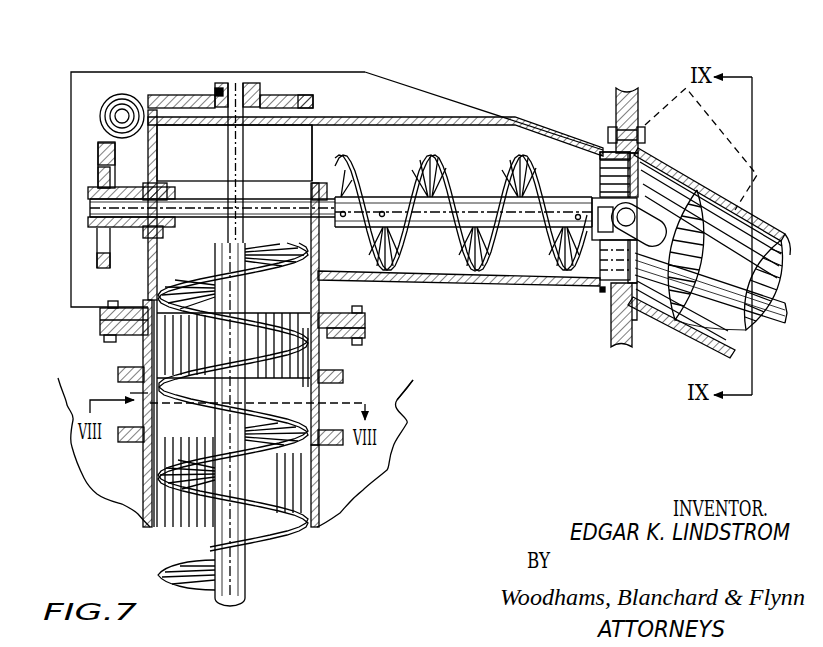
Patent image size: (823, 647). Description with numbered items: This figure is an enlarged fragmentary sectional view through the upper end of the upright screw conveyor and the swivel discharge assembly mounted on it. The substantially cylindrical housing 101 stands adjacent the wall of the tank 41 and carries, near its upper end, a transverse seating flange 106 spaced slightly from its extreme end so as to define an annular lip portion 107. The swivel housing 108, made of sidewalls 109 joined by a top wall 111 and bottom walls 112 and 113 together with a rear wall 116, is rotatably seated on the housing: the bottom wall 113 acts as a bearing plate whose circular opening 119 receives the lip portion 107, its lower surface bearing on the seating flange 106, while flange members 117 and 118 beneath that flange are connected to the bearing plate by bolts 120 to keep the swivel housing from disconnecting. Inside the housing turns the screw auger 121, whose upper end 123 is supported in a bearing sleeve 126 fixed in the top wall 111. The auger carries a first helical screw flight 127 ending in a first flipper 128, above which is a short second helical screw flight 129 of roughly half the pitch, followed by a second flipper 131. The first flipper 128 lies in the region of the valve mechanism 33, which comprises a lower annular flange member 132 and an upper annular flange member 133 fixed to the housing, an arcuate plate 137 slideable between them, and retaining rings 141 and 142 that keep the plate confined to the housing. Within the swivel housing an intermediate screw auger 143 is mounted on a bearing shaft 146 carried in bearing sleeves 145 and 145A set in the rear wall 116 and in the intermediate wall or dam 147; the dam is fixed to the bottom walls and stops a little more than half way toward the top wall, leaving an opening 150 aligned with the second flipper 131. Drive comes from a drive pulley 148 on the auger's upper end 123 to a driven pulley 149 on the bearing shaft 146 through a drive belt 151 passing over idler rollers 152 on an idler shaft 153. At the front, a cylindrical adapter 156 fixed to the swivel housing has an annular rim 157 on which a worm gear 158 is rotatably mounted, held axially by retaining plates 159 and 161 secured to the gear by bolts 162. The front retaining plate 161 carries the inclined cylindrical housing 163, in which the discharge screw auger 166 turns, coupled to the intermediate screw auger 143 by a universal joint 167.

The valve mechanism 33 is at (70, 416).
The tank 41 is at (395, 401).
The cylindrical housing 101 is at (318, 505).
The seating flange 106 is at (100, 327).
The lip portion 107 is at (143, 308).
The swivel housing 108 is at (368, 70).
The sidewalls 109 is at (402, 103).
The top wall 111 is at (472, 119).
The bottom wall 112 is at (523, 282).
The bottom wall 113 is at (333, 311).
The rear wall 116 is at (148, 257).
The flange member 117 is at (365, 337).
The flange member 118 is at (106, 336).
The circular opening 119 is at (306, 340).
The bolts 120 is at (364, 313).
The screw auger 121 is at (254, 571).
The upper end 123 is at (233, 83).
The bearing sleeve 126 is at (258, 100).
The first helical screw flight 127 is at (163, 572).
The first flipper 128 is at (393, 421).
The second helical screw flight 129 is at (187, 290).
The second flipper 131 is at (187, 143).
The lower annular flange member 132 is at (140, 455).
The upper annular flange member 133 is at (118, 373).
The arcuate plate 137 is at (143, 393).
The retaining ring 141 is at (388, 460).
The retaining ring 142 is at (346, 380).
The intermediate screw auger 143 is at (470, 212).
The bearing sleeve 145 is at (152, 185).
The bearing sleeve 145A is at (318, 183).
The bearing shaft 146 is at (100, 210).
The intermediate wall or dam 147 is at (313, 278).
The drive pulley 148 is at (167, 93).
The driven pulley 149 is at (107, 177).
The opening 150 is at (318, 165).
The drive belt 151 is at (102, 270).
The idler rollers 152 is at (108, 103).
The idler shaft 153 is at (118, 117).
The cylindrical adapter 156 is at (613, 257).
The annular rim 157 is at (610, 298).
The worm gear 158 is at (627, 90).
The retaining plate 159 is at (616, 125).
The front retaining plate 161 is at (640, 150).
The bolts 162 is at (630, 120).
The cylindrical housing 163 is at (712, 344).
The discharge screw auger 166 is at (753, 360).
The universal joint 167 is at (643, 222).